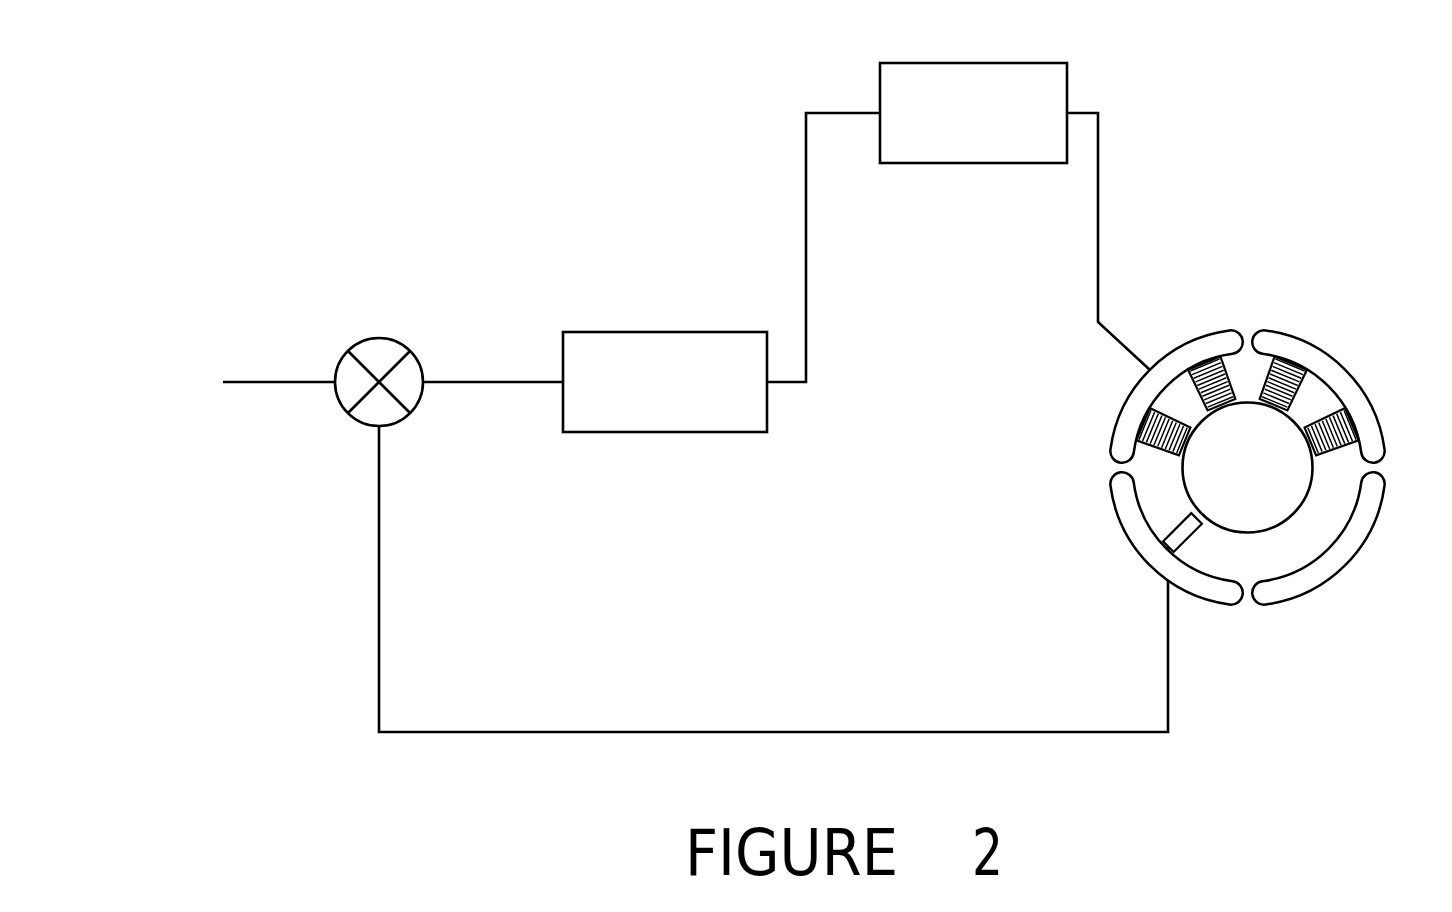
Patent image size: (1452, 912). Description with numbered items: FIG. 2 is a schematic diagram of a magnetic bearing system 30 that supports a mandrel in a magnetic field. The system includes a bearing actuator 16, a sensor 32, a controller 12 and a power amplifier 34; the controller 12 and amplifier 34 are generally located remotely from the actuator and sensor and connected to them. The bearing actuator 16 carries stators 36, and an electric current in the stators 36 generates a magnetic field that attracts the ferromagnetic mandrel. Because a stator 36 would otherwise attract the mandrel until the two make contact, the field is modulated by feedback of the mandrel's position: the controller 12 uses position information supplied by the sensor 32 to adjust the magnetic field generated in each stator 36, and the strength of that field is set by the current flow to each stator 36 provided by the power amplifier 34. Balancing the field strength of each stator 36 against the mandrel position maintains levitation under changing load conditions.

The controller 12 is at (623, 332).
The bearing actuator 16 is at (1336, 300).
The motor control system 30 is at (622, 170).
The sensor 32 is at (1163, 541).
The power amplifier 34 is at (963, 63).
The stator 36 is at (1173, 348).